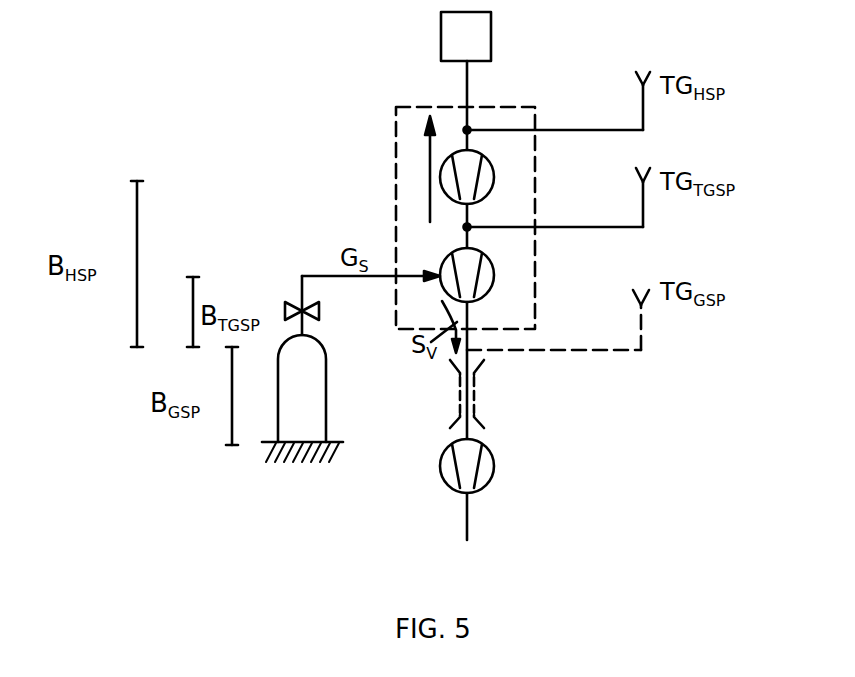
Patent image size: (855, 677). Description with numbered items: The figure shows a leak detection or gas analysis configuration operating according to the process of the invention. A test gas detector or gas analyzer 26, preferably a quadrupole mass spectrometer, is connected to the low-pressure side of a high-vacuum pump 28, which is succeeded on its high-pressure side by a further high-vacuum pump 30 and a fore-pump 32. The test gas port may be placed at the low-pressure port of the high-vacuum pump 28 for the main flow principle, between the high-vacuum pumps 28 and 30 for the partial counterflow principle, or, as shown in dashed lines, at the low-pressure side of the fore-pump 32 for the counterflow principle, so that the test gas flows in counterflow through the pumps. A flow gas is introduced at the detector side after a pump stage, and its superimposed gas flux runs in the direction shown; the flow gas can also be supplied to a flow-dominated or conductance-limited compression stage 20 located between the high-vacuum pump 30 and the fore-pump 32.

The compression stage 20 is at (458, 399).
The test gas detector or gas analyzer 26 is at (491, 32).
The high-vacuum pump 28 is at (440, 172).
The further high-vacuum pump 30 is at (494, 273).
The fore-pump 32 is at (494, 470).